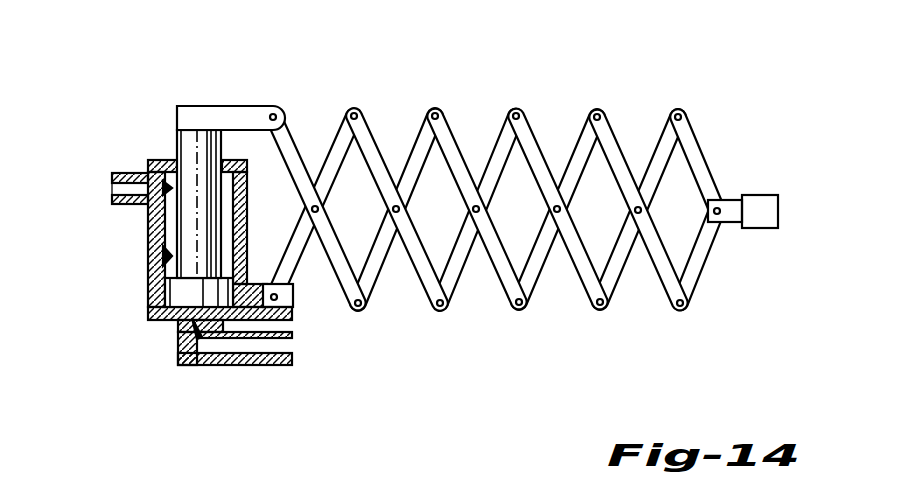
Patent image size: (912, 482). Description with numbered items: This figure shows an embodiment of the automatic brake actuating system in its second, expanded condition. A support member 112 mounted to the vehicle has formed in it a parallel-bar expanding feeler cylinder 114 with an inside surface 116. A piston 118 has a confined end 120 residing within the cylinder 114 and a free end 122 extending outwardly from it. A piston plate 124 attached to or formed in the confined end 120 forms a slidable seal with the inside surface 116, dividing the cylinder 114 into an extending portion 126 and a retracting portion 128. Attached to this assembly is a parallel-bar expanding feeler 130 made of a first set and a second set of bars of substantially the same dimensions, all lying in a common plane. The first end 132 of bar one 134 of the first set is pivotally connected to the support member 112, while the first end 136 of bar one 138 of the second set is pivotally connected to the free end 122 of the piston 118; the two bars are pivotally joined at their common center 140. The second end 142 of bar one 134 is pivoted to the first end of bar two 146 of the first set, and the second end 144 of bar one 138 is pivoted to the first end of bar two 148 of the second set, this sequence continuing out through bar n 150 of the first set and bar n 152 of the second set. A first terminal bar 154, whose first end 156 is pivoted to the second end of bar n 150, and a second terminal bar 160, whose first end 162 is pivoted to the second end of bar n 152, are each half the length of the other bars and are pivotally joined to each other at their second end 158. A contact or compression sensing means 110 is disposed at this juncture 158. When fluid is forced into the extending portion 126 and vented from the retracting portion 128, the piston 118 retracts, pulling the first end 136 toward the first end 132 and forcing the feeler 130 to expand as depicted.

The contact sensing means 110 is at (780, 206).
The support member 112 is at (230, 236).
The parallel-bar expanding feeler cylinder 114 is at (150, 287).
The inside surface 116 is at (162, 262).
The piston 118 is at (180, 143).
The confined end 120 is at (165, 238).
The free end 122 is at (191, 156).
The piston plate 124 is at (226, 283).
The extending portion 126 is at (116, 192).
The retracting portion 128 is at (231, 372).
The parallel-bar expanding feeler 130 is at (527, 203).
The first end of bar one of the first set 132 is at (286, 318).
The bar one of the first set 134 is at (298, 267).
The first end of bar one of the second set 136 is at (283, 104).
The bar one of the second set 138 is at (308, 116).
The center 140 is at (320, 209).
The second end of bar one of the first set 142 is at (357, 113).
The second end of bar one of the second set 144 is at (383, 275).
The bar two of the first set 146 is at (383, 140).
The bar two of the second set 148 is at (368, 302).
The bar n of the first set 150 is at (663, 138).
The bar n of the second set 152 is at (663, 283).
The first terminal bar 154 is at (697, 140).
The first end of the first terminal bar 156 is at (690, 108).
The second end of the terminal bars 158 is at (722, 198).
The second terminal bar 160 is at (713, 257).
The first end of the second terminal bar 162 is at (690, 308).